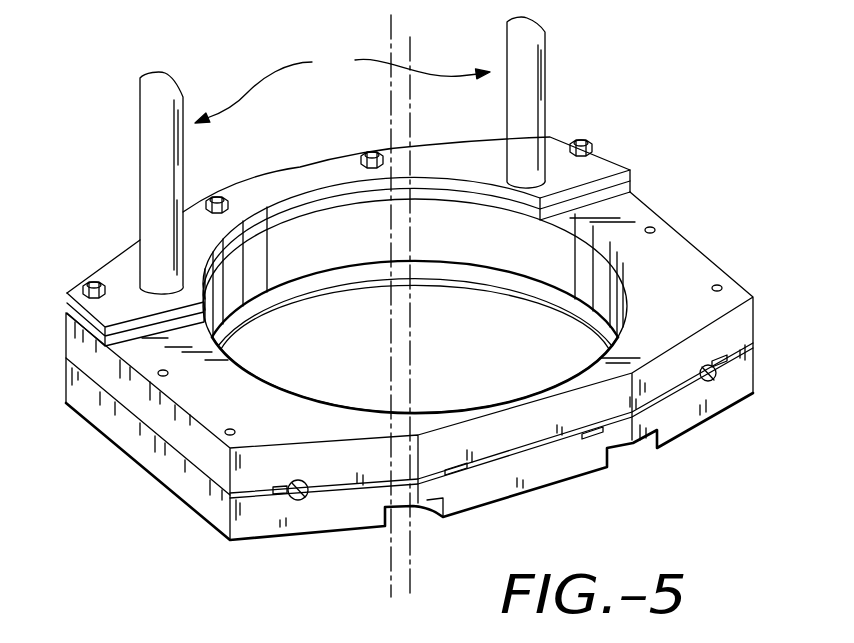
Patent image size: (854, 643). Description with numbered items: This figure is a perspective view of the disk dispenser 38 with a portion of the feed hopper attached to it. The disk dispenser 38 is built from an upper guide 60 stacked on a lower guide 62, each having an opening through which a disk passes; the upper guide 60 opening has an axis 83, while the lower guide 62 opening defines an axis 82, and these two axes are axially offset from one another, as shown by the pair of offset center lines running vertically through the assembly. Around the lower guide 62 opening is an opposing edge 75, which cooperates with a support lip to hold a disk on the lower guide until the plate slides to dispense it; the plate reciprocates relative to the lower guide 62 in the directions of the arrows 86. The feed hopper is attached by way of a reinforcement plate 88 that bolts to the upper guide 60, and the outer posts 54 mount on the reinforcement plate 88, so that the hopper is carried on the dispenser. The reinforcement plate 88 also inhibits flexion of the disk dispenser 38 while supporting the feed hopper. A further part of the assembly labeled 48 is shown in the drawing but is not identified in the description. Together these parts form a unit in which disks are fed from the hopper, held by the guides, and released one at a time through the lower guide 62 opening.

The disk dispenser 38 is at (684, 255).
The mounting plate 48 is at (607, 170).
The outer posts 54 is at (342, 85).
The upper guide 60 is at (732, 287).
The lower guide 62 is at (744, 368).
The opposing edge 75 is at (369, 278).
The axis 82 is at (388, 32).
The axis 83 is at (405, 125).
The arrows 86 is at (107, 270).
The reinforcement plate 88 is at (499, 150).